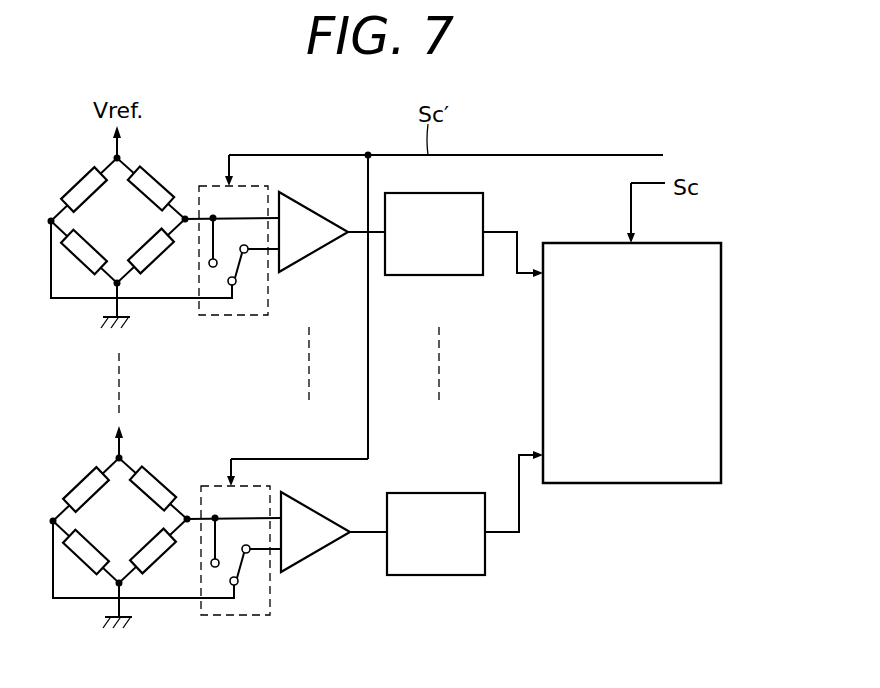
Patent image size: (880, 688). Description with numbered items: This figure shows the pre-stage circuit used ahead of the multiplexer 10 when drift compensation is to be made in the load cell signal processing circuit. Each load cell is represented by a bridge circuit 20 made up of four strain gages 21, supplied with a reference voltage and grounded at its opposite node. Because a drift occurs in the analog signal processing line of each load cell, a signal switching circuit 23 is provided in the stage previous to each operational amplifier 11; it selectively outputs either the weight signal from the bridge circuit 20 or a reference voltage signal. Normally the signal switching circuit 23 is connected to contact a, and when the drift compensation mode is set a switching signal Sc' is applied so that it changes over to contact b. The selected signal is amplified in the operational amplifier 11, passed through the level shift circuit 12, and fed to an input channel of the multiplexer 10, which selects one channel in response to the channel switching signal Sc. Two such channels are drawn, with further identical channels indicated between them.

The multiplexer 10 is at (680, 483).
The operational amplifier 11 is at (321, 216).
The level shift circuit 12 is at (443, 193).
The bridge circuit 20 is at (130, 231).
The strain gage 21 is at (80, 173).
The signal switching circuit 23 is at (250, 315).